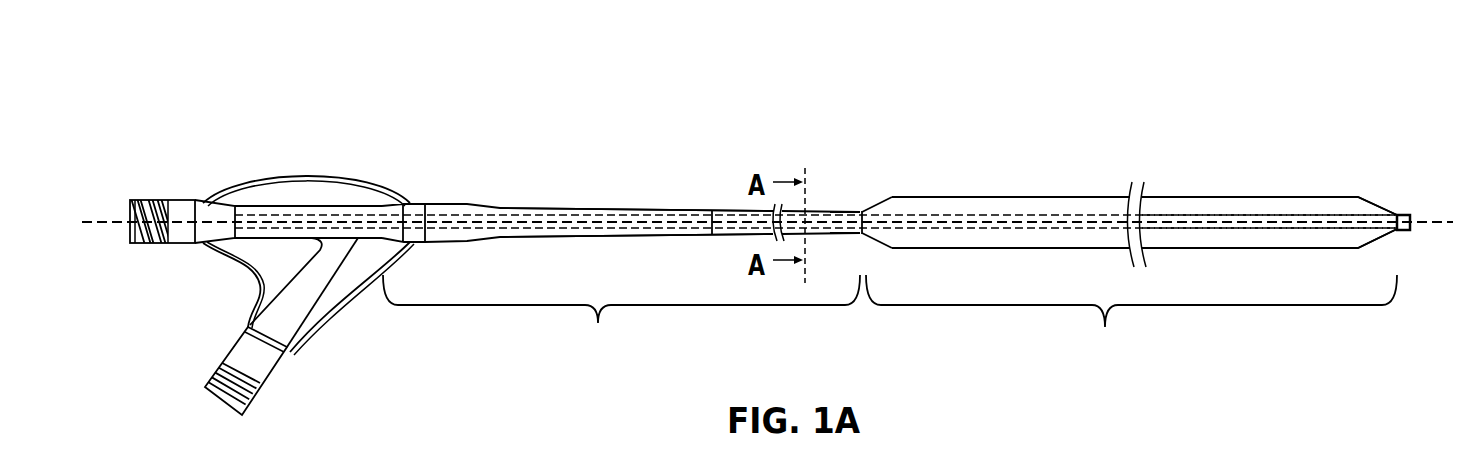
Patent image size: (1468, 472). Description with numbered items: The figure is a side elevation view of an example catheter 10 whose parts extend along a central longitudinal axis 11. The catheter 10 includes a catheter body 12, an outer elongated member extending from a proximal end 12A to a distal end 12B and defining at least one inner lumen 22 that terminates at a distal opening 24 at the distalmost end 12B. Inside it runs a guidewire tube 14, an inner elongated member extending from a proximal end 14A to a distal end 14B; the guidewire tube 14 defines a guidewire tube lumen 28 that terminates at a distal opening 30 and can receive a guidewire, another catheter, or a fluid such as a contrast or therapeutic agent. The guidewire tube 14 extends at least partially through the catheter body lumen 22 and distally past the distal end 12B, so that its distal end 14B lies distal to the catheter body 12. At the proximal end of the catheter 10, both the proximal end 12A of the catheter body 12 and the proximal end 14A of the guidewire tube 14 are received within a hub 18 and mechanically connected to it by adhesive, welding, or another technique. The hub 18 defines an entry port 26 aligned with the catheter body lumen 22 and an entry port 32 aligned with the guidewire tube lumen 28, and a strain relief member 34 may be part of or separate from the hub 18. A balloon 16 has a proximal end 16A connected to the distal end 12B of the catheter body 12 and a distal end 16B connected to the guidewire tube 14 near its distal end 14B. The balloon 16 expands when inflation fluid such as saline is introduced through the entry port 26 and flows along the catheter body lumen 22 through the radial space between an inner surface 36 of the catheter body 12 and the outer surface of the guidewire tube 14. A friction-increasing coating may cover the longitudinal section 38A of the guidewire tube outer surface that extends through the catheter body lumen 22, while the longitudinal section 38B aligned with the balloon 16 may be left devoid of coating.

The catheter 10 is at (999, 72).
The central longitudinal axis 11 is at (617, 220).
The catheter body 12 is at (733, 195).
The proximal end of catheter body 12A is at (390, 200).
The distal end of catheter body 12B is at (858, 210).
The guidewire tube 14 is at (1194, 204).
The proximal end of guidewire tube 14A is at (227, 200).
The distal end of guidewire tube 14B is at (1403, 232).
The balloon 16 is at (1073, 178).
The proximal end of balloon 16A is at (866, 211).
The distal end of balloon 16B is at (1397, 210).
The hub 18 is at (287, 175).
The inner lumen 22 is at (827, 212).
The distal opening 24 is at (863, 212).
The entry port 26 is at (223, 404).
The guidewire tube lumen 28 is at (973, 217).
The distal opening 30 is at (1410, 217).
The entry port 32 is at (130, 212).
The strain relief member 34 is at (573, 215).
The inner surface 36 is at (717, 235).
The longitudinal section 38A is at (621, 317).
The longitudinal section 38B is at (1131, 318).